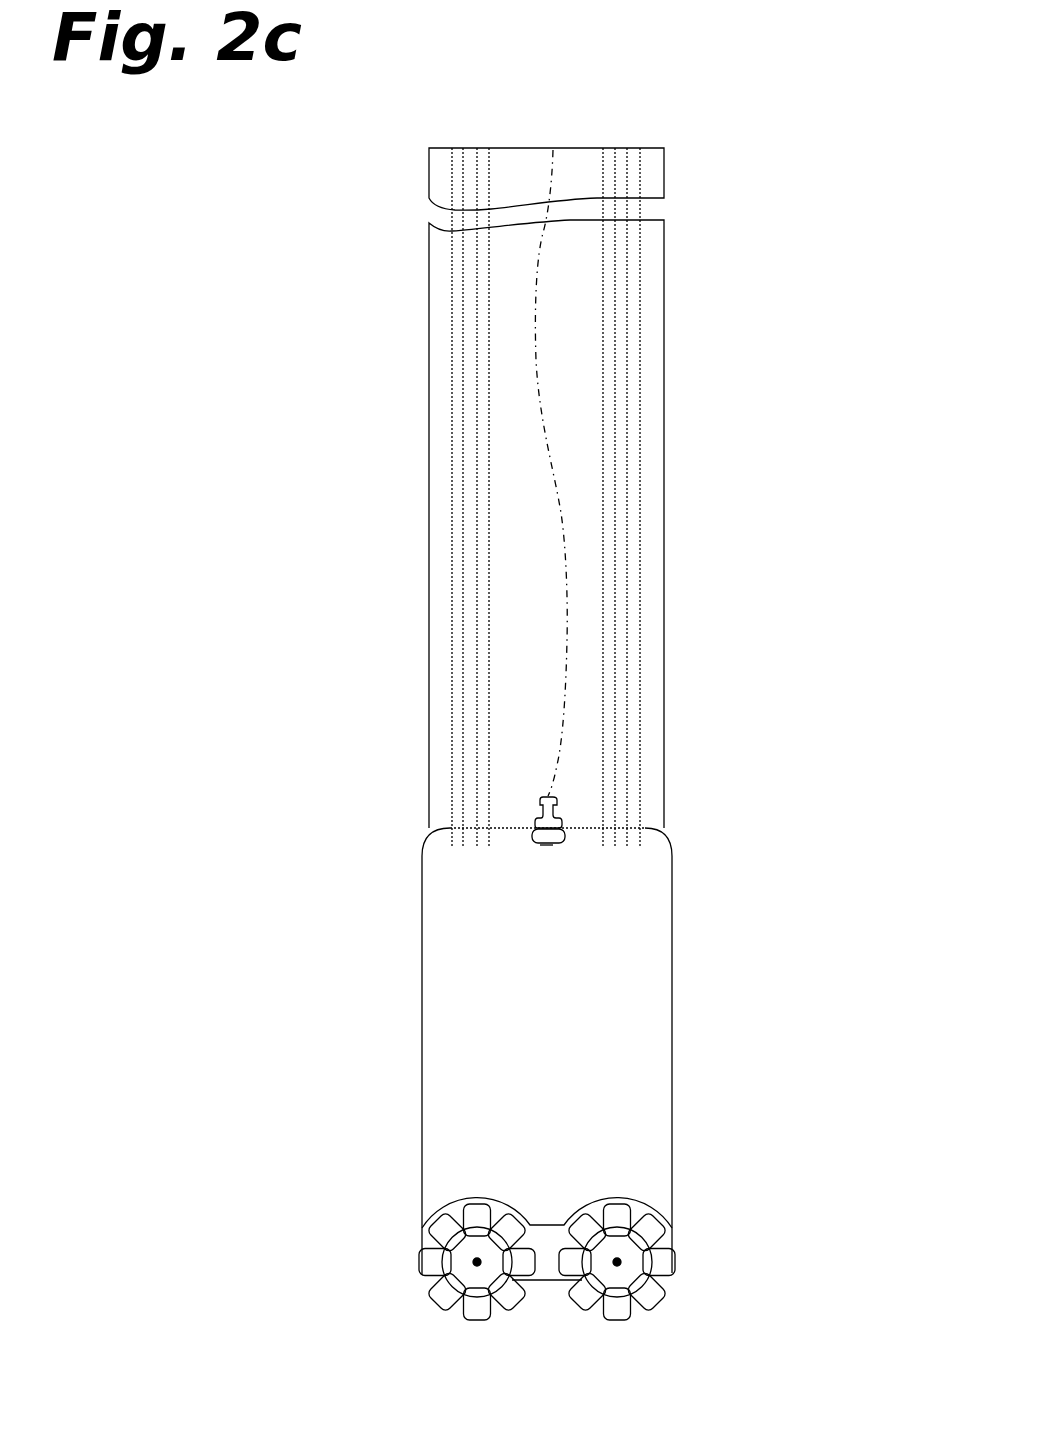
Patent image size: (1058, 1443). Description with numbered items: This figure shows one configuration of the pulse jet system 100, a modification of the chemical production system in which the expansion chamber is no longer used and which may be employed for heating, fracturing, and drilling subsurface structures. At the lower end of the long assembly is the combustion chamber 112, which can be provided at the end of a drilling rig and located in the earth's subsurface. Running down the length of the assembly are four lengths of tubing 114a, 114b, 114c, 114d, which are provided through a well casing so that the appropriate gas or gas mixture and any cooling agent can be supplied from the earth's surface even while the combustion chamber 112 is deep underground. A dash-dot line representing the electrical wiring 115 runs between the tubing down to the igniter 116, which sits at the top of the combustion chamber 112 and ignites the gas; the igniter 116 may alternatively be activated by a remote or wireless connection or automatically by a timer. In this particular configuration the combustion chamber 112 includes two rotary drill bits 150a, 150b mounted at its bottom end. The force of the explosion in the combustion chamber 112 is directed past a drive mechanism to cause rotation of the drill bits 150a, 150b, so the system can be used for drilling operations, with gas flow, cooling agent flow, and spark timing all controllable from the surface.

The pulse jet system 100 is at (593, 703).
The combustion chamber 112 is at (422, 887).
The tubing 114a is at (452, 150).
The tubing 114b is at (490, 148).
The tubing 114c is at (603, 150).
The tubing 114d is at (641, 148).
The electrical wiring 115 is at (538, 248).
The igniter 116 is at (547, 848).
The rotary drill bit 150a is at (420, 1256).
The rotary drill bit 150b is at (674, 1256).